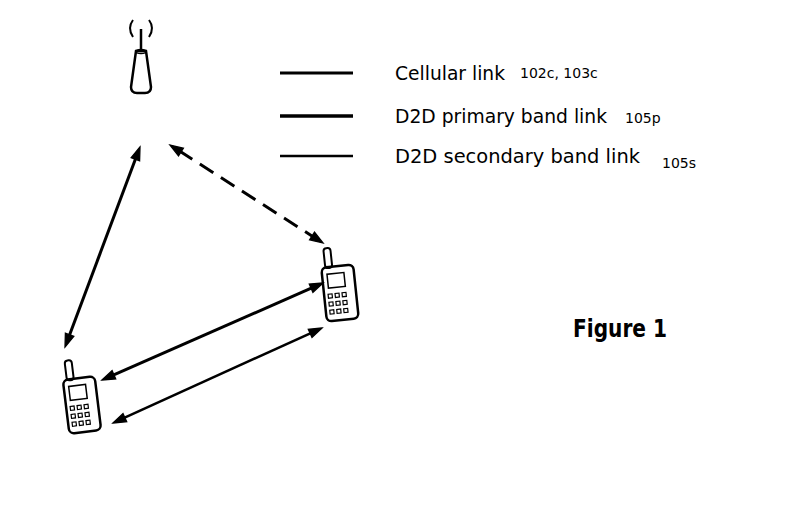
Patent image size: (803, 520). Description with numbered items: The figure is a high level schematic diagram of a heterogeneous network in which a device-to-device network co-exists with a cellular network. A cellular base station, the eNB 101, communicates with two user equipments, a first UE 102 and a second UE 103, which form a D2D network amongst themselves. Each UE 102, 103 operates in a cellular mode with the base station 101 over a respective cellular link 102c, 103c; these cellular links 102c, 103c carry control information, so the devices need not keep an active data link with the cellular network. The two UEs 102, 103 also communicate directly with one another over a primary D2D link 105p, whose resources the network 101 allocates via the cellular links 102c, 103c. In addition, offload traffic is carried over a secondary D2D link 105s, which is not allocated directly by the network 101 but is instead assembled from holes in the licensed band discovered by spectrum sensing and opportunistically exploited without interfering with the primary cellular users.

The cellular base station/eNB 101 is at (169, 73).
The UE 102 is at (334, 299).
The UE 103 is at (74, 416).
The cellular link 102c is at (272, 208).
The cellular link 103c is at (103, 248).
The primary D2D link 105p is at (228, 325).
The secondary D2D link 105s is at (202, 388).